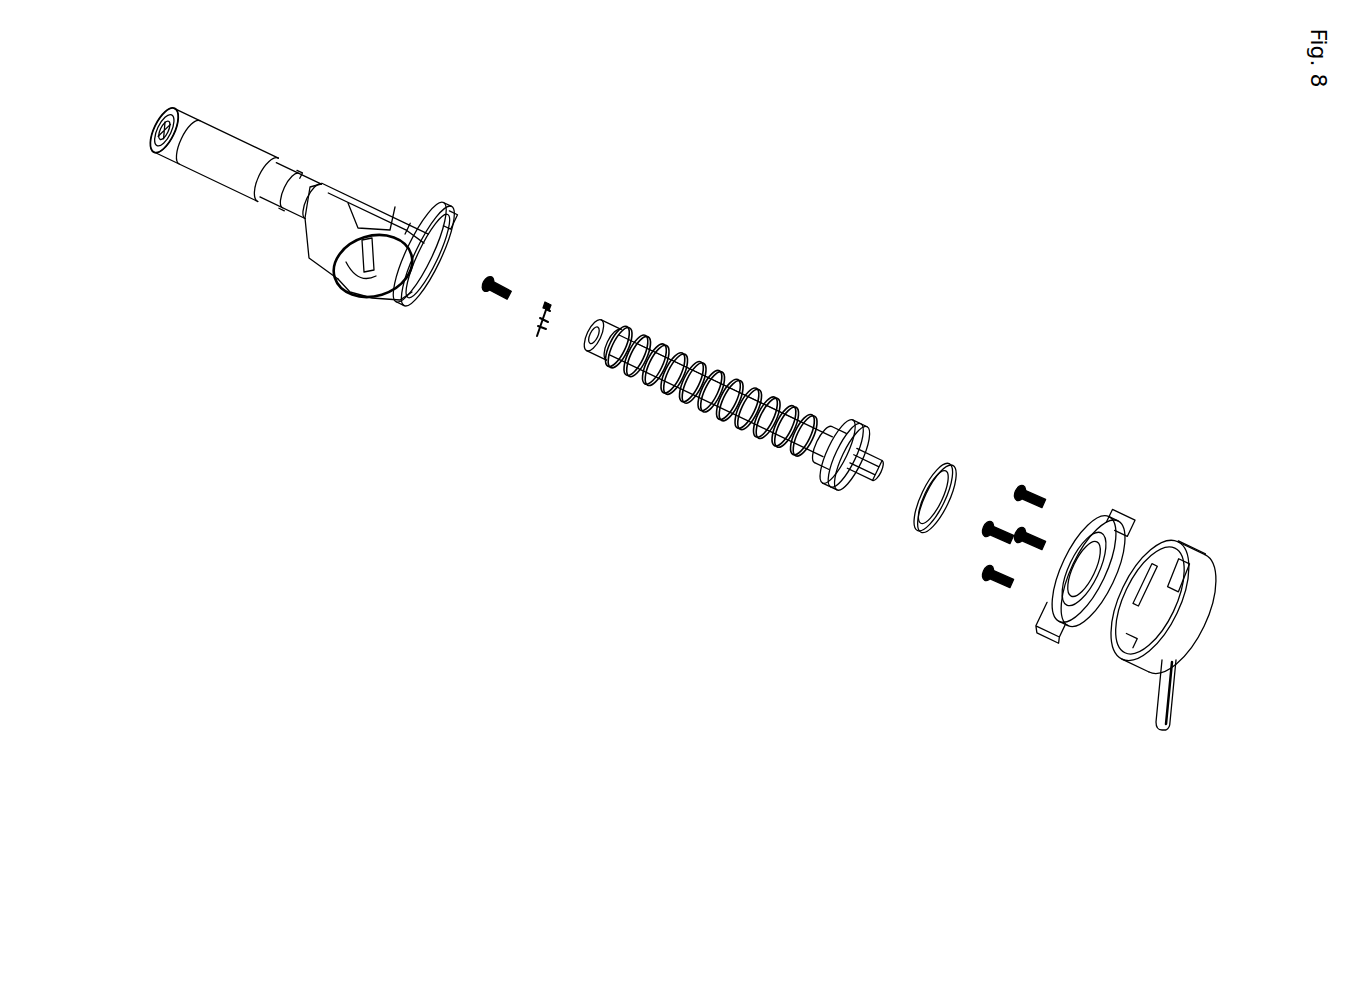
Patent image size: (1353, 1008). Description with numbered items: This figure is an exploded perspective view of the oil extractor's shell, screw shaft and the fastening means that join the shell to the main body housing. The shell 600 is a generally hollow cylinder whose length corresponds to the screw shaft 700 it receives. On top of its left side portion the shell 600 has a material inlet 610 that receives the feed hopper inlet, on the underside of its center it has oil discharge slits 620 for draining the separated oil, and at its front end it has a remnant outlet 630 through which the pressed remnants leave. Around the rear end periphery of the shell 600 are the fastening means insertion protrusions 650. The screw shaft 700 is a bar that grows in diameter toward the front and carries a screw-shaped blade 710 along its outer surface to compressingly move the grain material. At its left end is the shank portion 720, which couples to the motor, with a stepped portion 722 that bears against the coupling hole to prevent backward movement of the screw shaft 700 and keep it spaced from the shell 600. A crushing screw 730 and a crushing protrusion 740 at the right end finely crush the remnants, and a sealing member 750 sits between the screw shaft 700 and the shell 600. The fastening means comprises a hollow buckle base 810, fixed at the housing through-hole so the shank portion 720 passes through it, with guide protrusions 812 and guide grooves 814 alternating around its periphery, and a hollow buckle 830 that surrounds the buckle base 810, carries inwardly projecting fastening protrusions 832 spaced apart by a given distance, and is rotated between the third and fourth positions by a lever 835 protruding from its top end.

The shell 600 is at (225, 154).
The material inlet 610 is at (358, 289).
The oil discharge slits 620 is at (291, 168).
The remnant outlet 630 is at (152, 154).
The fastening means insertion protrusions 650 is at (455, 220).
The screw shaft 700 is at (718, 390).
The screw-shaped blade 710 is at (678, 397).
The shank portion 720 is at (886, 474).
The stepped portion 722 is at (873, 446).
The crushing screw 730 is at (540, 327).
The crushing protrusion 740 is at (486, 298).
The sealing member 750 is at (958, 485).
The buckle base 810 is at (1103, 523).
The guide protrusions 812 is at (1108, 564).
The guide grooves 814 is at (1083, 622).
The buckle 830 is at (1193, 573).
The fastening protrusions 832 is at (1207, 558).
The lever 835 is at (1165, 725).